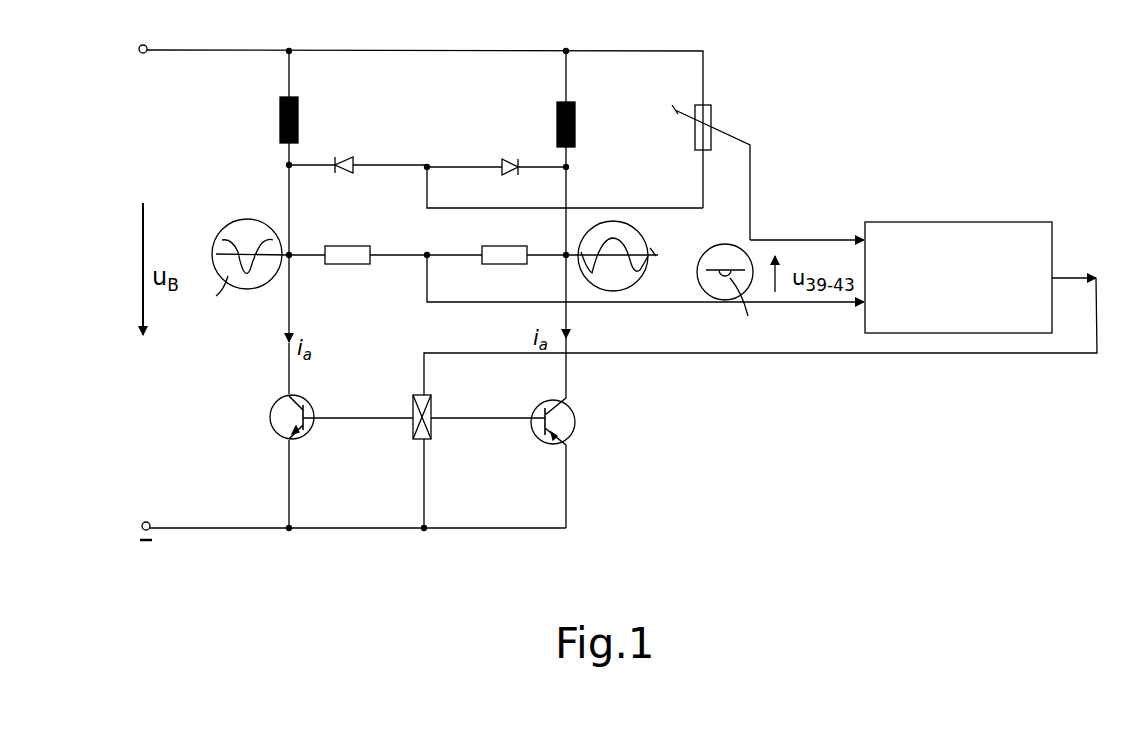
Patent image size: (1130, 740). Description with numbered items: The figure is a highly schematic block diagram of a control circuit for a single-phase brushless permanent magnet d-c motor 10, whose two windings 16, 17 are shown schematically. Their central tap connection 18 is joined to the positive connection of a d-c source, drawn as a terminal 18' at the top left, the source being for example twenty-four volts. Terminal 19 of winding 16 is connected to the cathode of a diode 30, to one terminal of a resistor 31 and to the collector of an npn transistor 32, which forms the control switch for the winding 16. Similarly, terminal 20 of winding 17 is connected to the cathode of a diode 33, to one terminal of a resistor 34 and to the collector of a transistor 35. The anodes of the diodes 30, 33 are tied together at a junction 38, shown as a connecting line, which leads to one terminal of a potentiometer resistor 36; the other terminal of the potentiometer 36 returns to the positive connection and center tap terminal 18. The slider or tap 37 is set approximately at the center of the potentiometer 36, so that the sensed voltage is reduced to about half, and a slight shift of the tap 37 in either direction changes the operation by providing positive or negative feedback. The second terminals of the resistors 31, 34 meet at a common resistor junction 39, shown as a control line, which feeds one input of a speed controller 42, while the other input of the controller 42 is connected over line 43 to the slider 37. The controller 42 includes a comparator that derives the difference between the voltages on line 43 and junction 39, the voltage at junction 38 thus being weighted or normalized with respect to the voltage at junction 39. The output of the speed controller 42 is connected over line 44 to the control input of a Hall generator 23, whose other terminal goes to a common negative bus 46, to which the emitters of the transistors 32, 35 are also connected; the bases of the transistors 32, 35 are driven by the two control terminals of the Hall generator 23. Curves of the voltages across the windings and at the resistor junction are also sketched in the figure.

The motor 10 is at (434, 112).
The winding 16 is at (280, 124).
The winding 17 is at (557, 125).
The central tap connection 18 is at (425, 111).
The positive supply terminal 18' is at (161, 55).
The terminal of winding 16 19 is at (290, 250).
The terminal of winding 17 20 is at (565, 254).
The Hall generator 23 is at (414, 396).
The diode 30 is at (348, 160).
The resistor 31 is at (357, 254).
The npn transistor 32 is at (307, 403).
The diode 33 is at (505, 163).
The resistor 34 is at (512, 246).
The transistor 35 is at (548, 403).
The potentiometer resistor 36 is at (710, 117).
The slider or tap 37 is at (753, 143).
The junction 38 is at (674, 208).
The common resistor junction 39 is at (655, 302).
The speed controller 42 is at (992, 232).
The line 43 is at (751, 212).
The line 44 is at (950, 355).
The common negative bus 46 is at (392, 528).